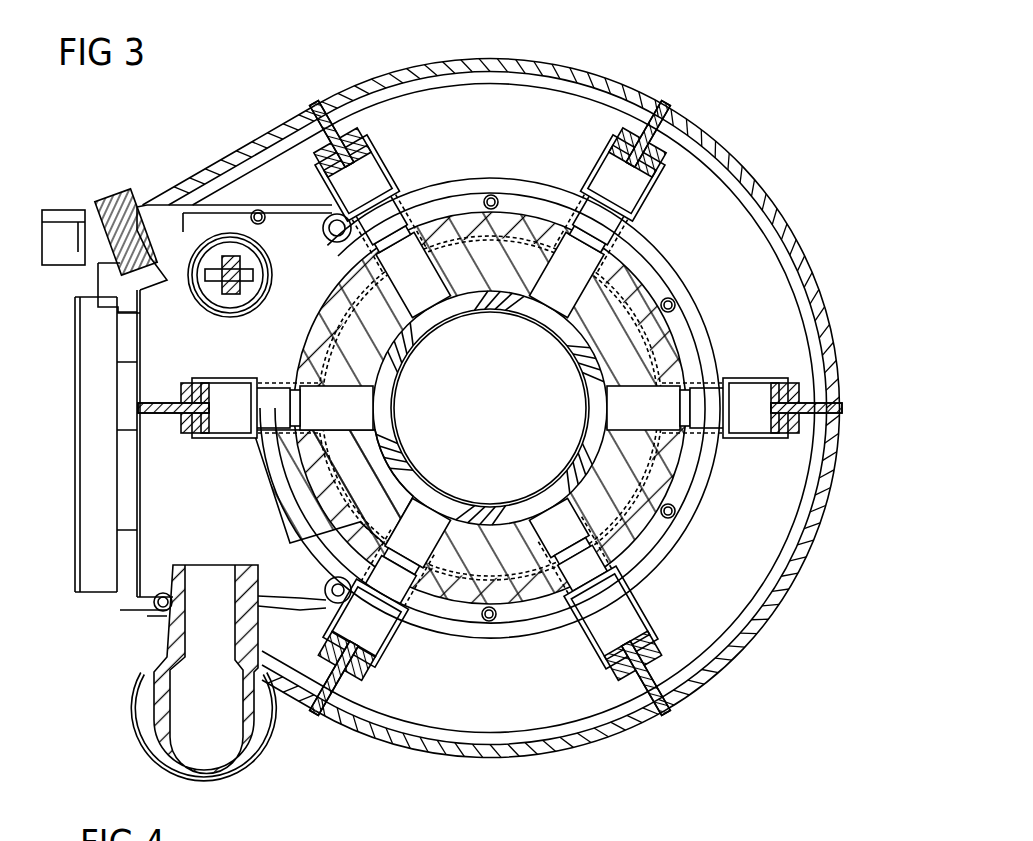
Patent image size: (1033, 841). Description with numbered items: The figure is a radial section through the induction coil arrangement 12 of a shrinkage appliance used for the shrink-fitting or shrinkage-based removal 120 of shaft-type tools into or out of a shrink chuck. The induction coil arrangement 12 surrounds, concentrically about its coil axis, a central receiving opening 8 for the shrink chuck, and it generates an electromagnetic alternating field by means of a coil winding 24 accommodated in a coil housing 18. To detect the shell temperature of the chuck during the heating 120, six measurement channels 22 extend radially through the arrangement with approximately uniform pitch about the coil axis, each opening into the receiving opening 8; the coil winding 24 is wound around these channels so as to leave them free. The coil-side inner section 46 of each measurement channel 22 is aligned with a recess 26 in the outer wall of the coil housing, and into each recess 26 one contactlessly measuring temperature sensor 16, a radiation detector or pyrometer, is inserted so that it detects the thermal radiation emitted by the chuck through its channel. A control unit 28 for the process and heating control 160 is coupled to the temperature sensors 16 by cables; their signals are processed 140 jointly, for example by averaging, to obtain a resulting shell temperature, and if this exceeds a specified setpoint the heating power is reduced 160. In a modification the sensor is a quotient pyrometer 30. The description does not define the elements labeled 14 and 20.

The receiving opening 8 is at (501, 419).
The induction coil arrangement 12 is at (428, 403).
The shrink-fitting or shrinkage-based removal 120 is at (673, 193).
The bearing 14 is at (490, 414).
The temperature sensor 16 is at (490, 414).
The coil housing 18 is at (510, 514).
The shaft 20 is at (543, 312).
The measurement channels 22 is at (428, 282).
The coil winding 24 is at (762, 181).
The recess 26 is at (717, 492).
The control unit 28 is at (257, 689).
The quotient pyrometer 30 is at (242, 400).
The coil-side inner section 46 is at (605, 692).
The joint processing of measurement signals 140 is at (257, 689).
The heating control 160 is at (213, 715).